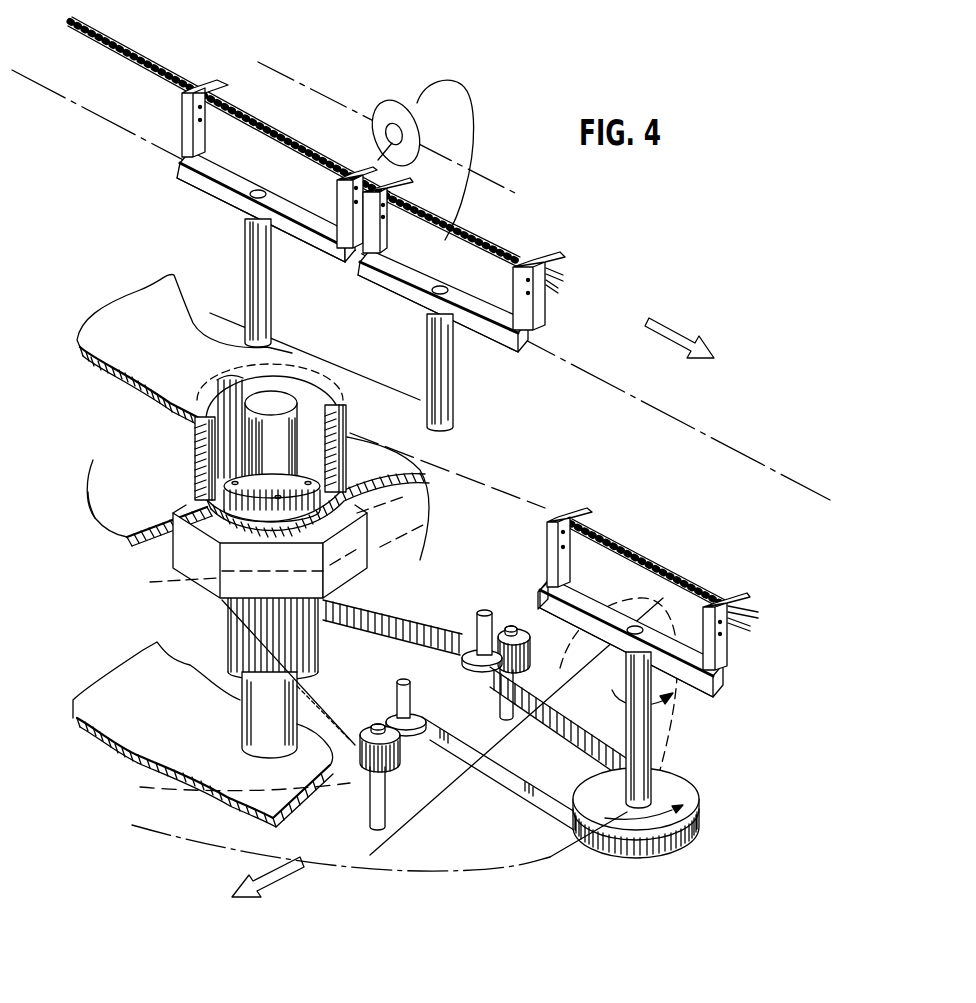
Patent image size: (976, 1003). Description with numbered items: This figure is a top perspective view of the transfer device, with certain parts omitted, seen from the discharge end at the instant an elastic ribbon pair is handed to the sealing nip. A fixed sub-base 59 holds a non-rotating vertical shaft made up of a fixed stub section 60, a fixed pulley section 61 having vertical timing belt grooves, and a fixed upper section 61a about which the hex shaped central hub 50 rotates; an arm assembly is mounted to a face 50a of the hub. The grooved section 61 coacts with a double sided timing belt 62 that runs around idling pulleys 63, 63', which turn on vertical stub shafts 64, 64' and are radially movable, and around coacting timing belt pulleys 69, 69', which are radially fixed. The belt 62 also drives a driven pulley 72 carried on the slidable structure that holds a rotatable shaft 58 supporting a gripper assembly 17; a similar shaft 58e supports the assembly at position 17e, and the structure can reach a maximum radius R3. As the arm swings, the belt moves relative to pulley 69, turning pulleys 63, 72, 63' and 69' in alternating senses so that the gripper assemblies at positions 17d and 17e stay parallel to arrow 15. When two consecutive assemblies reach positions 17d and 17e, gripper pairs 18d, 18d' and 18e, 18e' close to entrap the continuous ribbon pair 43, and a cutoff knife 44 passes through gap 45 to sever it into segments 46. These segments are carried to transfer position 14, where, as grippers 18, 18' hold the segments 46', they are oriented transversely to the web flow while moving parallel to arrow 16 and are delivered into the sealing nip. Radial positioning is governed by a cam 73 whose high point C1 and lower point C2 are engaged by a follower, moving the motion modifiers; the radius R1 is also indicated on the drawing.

The transfer position 14 is at (440, 243).
The arrow 15 is at (717, 294).
The arrow 16 is at (285, 880).
The gripper assembly 17 is at (693, 660).
The gripper assembly position 17d is at (197, 177).
The gripper assembly position 17e is at (493, 335).
The gripper 18 is at (540, 547).
The gripper 18' is at (752, 631).
The gripper 18d is at (217, 91).
The gripper 18d' is at (330, 173).
The gripper 18e is at (413, 180).
The gripper 18e' is at (568, 269).
The continuous ribbon pair 43 is at (143, 53).
The cutoff knife 44 is at (390, 106).
The gap 45 is at (353, 263).
The ribbon segments 46 is at (463, 226).
The ribbon segments at transfer position 46' is at (648, 554).
The central hub 50 is at (217, 583).
The hub face 50a is at (327, 586).
The shaft 58 is at (257, 258).
The shaft 58e is at (430, 335).
The sub-base 59 is at (103, 710).
The fixed stub section 60 is at (253, 698).
The fixed pulley section 61 is at (300, 643).
The fixed upper section 61a is at (287, 437).
The timing belt 62 is at (507, 790).
The idling pulley 63 is at (458, 659).
The idling pulley 63' is at (383, 705).
The vertical stub shaft 64 is at (467, 619).
The vertical stub shaft 64' is at (361, 730).
The timing belt pulley 69 is at (510, 642).
The timing belt pulley 69' is at (401, 781).
The driven pulley 72 is at (687, 770).
The cam 73 is at (127, 470).
The radius R1 is at (314, 358).
The maximum radius R3 is at (490, 875).
The cam high point C1 is at (95, 524).
The cam low point C2 is at (383, 510).